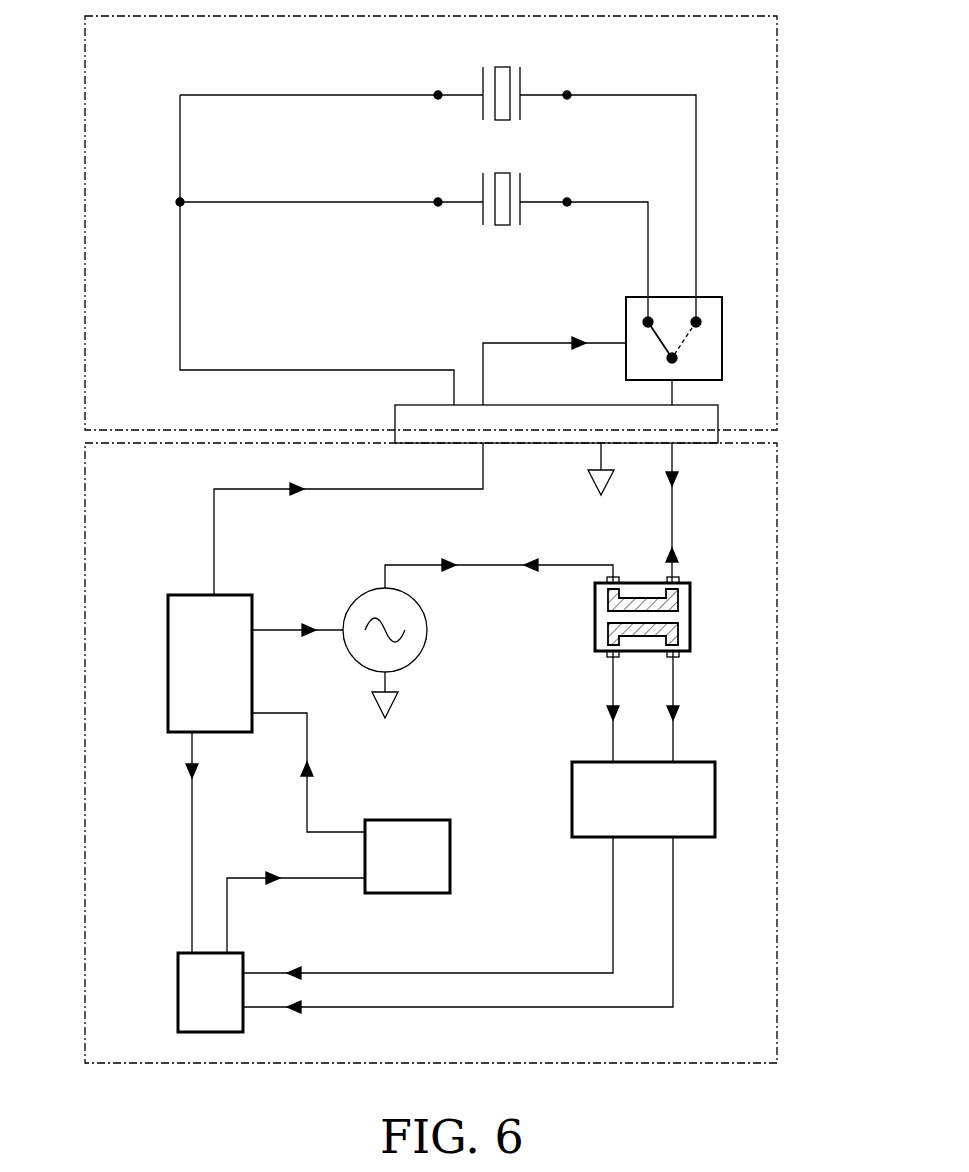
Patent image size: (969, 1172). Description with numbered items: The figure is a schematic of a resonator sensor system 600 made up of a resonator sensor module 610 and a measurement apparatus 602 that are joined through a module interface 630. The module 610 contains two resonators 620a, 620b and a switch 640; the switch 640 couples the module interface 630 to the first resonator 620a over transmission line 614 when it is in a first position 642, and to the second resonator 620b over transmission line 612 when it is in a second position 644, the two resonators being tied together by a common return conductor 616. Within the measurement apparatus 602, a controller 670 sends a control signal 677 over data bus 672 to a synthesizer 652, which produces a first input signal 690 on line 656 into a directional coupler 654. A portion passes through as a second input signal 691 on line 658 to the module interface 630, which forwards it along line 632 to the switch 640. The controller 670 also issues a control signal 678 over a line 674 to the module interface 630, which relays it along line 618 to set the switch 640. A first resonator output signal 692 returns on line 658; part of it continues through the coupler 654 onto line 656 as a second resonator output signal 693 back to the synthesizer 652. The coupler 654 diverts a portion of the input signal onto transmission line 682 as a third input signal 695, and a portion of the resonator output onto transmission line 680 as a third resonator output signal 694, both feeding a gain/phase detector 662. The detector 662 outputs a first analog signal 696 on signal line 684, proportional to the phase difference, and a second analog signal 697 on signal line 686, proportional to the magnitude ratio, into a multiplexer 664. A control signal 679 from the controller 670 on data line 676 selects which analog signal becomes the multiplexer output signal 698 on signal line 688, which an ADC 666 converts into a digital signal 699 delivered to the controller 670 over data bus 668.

The resonator sensor system 600 is at (808, 128).
The resonator sensor module 610 is at (68, 278).
The measurement apparatus 602 is at (68, 718).
The transmission line 612 is at (697, 183).
The transmission line 614 is at (600, 204).
The common conductor 616 is at (181, 283).
The line 618 is at (500, 344).
The resonator 620a is at (462, 237).
The resonator 620b is at (530, 70).
The module interface 630 is at (718, 418).
The line 632 is at (672, 392).
The switch 640 is at (722, 330).
The first position 642 is at (635, 344).
The second position 644 is at (707, 346).
The synthesizer 652 is at (427, 633).
The directional coupler 654 is at (690, 618).
The line 656 is at (391, 562).
The line 658 is at (673, 519).
The gain/phase detector 662 is at (715, 798).
The multiplexer 664 is at (198, 1032).
The ADC 666 is at (451, 852).
The data bus 668 is at (309, 795).
The controller 670 is at (168, 668).
The data bus 672 is at (276, 632).
The switch control line 674 is at (215, 551).
The data line 676 is at (190, 852).
The control signal 677 is at (307, 624).
The control signal 678 is at (582, 343).
The control signal 679 is at (194, 772).
The transmission line 680 is at (675, 688).
The transmission line 682 is at (613, 688).
The signal line 684 is at (675, 918).
The signal line 686 is at (613, 918).
The signal line 688 is at (229, 922).
The first input signal 690 is at (447, 557).
The second input signal 691 is at (677, 553).
The first resonator output signal 692 is at (675, 484).
The second resonator output signal 693 is at (527, 562).
The third resonator output signal 694 is at (675, 716).
The third input signal 695 is at (613, 716).
The first analog signal 696 is at (293, 1010).
The second analog signal 697 is at (292, 970).
The multiplexer output signal 698 is at (272, 874).
The digital signal 699 is at (309, 770).